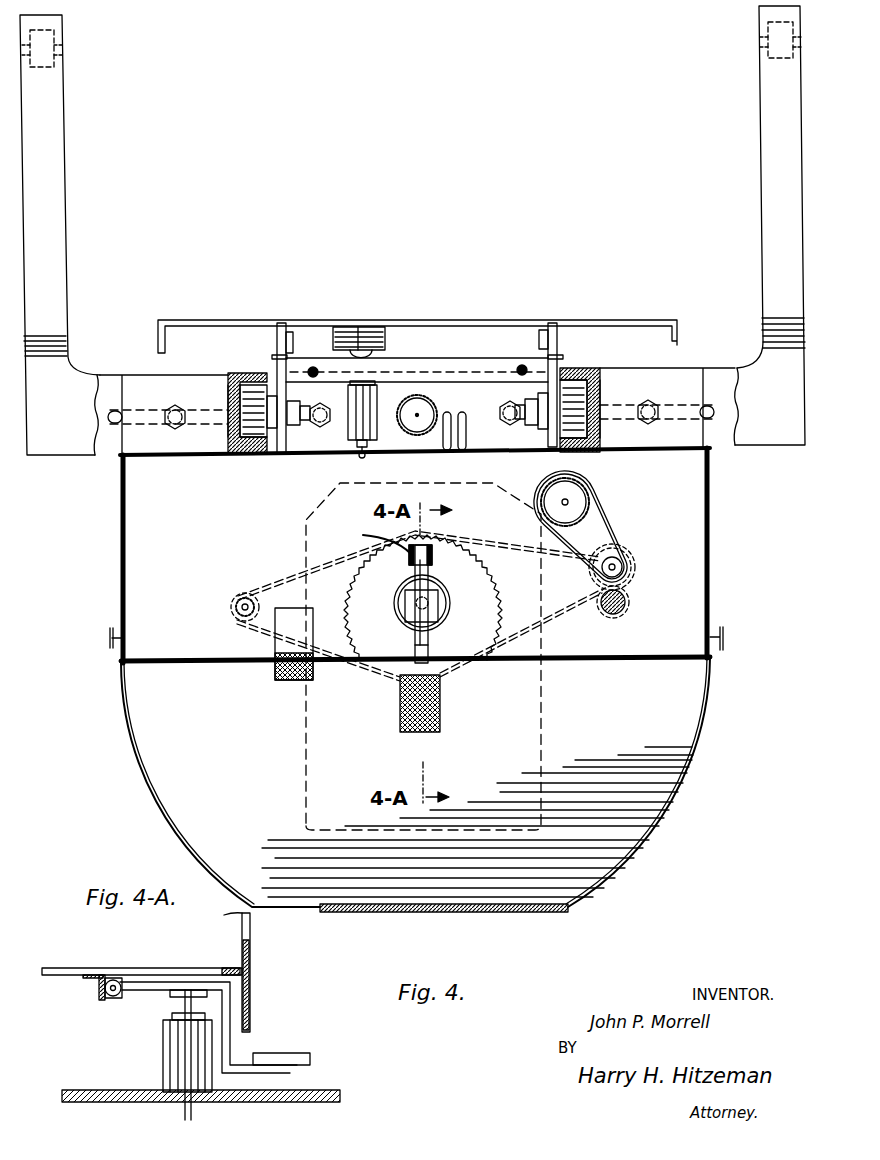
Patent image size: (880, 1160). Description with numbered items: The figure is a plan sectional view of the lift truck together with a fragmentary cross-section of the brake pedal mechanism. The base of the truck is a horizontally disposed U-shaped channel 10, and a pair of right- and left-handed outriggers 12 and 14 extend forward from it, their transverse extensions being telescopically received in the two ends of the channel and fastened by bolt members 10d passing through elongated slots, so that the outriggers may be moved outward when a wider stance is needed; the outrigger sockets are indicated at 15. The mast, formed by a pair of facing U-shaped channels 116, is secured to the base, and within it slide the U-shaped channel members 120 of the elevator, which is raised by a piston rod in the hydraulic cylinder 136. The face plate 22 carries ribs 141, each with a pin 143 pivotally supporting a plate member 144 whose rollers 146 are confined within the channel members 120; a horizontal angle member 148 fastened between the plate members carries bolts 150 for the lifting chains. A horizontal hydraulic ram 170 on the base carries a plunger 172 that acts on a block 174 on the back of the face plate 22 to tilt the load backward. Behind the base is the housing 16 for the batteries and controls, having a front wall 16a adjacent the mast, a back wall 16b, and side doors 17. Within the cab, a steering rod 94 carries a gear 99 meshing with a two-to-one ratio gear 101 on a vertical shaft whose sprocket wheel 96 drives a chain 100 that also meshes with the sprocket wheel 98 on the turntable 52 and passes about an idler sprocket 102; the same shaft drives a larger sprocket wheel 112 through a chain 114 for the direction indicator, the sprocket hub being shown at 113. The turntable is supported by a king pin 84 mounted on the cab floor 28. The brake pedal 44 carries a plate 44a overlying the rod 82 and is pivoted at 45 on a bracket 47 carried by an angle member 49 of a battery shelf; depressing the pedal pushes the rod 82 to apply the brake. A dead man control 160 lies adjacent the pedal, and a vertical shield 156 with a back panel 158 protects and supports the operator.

In FIG. 4, the U-shaped channel base 10 is at (110, 443).
In FIG. 4, the bolt members 10d is at (175, 405).
In FIG. 4, the outrigger 12 is at (57, 140).
In FIG. 4, the outrigger 14 is at (760, 158).
In FIG. 4, the post socket 15 is at (60, 64).
In FIG. 4-A, the housing 16 is at (250, 937).
In FIG. 4, the front wall 16a is at (168, 458).
In FIG. 4, the back wall 16b is at (180, 666).
In FIG. 4, the side doors 17 is at (121, 583).
In FIG. 4, the face plate 22 is at (410, 321).
In FIG. 4-A, the floor 28 is at (315, 1088).
In FIG. 4, the brake pedal 44 is at (400, 720).
In FIG. 4-A, the brake pedal 44 is at (283, 1056).
In FIG. 4, the plate 44a is at (435, 613).
In FIG. 4-A, the plate 44a is at (183, 984).
In FIG. 4, the pivot 45 is at (430, 560).
In FIG. 4-A, the pivot 45 is at (122, 967).
In FIG. 4, the bracket 47 is at (383, 544).
In FIG. 4-A, the bracket 47 is at (112, 991).
In FIG. 4-A, the angle member 49 is at (92, 980).
In FIG. 4, the turntable 52 is at (305, 742).
In FIG. 4, the rod 82 is at (405, 603).
In FIG. 4-A, the rod 82 is at (182, 1005).
In FIG. 4-A, the king pin 84 is at (172, 1062).
In FIG. 4, the steering rod 94 is at (605, 612).
In FIG. 4, the sprocket wheel 96 is at (628, 572).
In FIG. 4, the sprocket wheel 98 is at (500, 590).
In FIG. 4, the gear 99 is at (625, 607).
In FIG. 4, the chain 100 is at (250, 586).
In FIG. 4, the gear 101 is at (635, 555).
In FIG. 4, the idler sprocket 102 is at (235, 616).
In FIG. 4, the sprocket wheel 112 is at (578, 504).
In FIG. 4, the sprocket hub 113 is at (563, 503).
In FIG. 4, the chain 114 is at (605, 527).
In FIG. 4, the U-shaped channels 116 is at (232, 450).
In FIG. 4, the U-shaped channel members 120 is at (240, 374).
In FIG. 4, the hydraulic cylinder 136 is at (412, 436).
In FIG. 4, the ribs 141 is at (280, 332).
In FIG. 4, the pin 143 is at (293, 338).
In FIG. 4, the plate member 144 is at (278, 357).
In FIG. 4, the rollers 146 is at (267, 447).
In FIG. 4, the angle member 148 is at (455, 360).
In FIG. 4, the bolts 150 is at (313, 378).
In FIG. 4, the shield 156 is at (652, 830).
In FIG. 4, the back panel 158 is at (462, 913).
In FIG. 4, the dead man control 160 is at (290, 683).
In FIG. 4, the hydraulic ram 170 is at (348, 432).
In FIG. 4, the plunger 172 is at (362, 352).
In FIG. 4, the block 174 is at (388, 338).